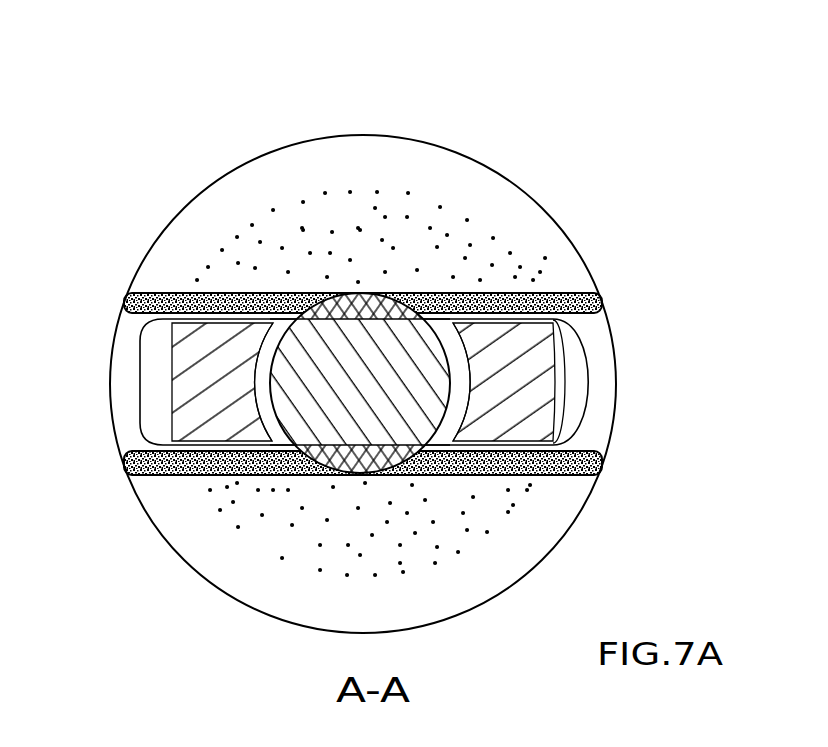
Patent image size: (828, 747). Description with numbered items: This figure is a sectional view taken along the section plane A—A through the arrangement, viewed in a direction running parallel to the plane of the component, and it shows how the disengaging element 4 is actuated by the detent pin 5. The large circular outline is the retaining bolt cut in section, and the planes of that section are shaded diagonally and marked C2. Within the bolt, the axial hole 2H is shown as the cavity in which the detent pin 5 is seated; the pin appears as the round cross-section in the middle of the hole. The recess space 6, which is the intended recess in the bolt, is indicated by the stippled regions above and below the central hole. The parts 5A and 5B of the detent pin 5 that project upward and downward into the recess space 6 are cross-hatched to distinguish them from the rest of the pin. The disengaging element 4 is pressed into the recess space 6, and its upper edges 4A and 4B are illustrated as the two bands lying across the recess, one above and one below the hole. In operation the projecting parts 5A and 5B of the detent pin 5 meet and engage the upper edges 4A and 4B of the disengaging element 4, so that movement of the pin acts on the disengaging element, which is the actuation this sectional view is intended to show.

The disengaging element 4 is at (162, 265).
The upper edge of the disengaging element 4A is at (553, 287).
The upper edge of the disengaging element 4B is at (553, 477).
The detent pin 5 is at (382, 367).
The part of the detent pin 5A is at (383, 295).
The part of the detent pin 5B is at (357, 478).
The recess space 6 is at (330, 213).
The axial hole 2H is at (543, 410).
The section planes of the retaining bolt C2 is at (460, 380).